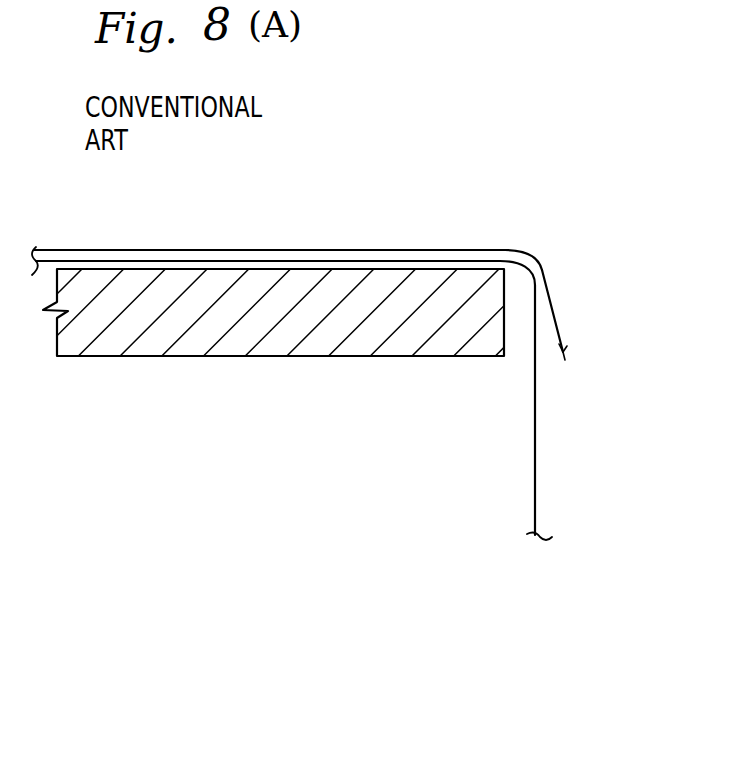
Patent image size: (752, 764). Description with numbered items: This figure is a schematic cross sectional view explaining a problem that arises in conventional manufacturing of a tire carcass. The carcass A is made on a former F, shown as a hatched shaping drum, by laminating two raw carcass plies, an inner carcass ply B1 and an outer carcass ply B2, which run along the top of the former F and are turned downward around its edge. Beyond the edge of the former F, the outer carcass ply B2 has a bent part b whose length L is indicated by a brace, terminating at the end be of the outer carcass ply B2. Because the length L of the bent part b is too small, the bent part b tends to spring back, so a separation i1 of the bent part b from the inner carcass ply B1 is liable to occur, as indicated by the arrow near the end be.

The carcass A is at (397, 108).
The inner carcass ply B1 is at (325, 259).
The outer carcass ply B2 is at (385, 249).
The former F is at (327, 356).
The length of the bent part L is at (542, 246).
The bent part b is at (563, 353).
The end of the outer carcass ply be is at (570, 375).
The separation i1 is at (548, 368).